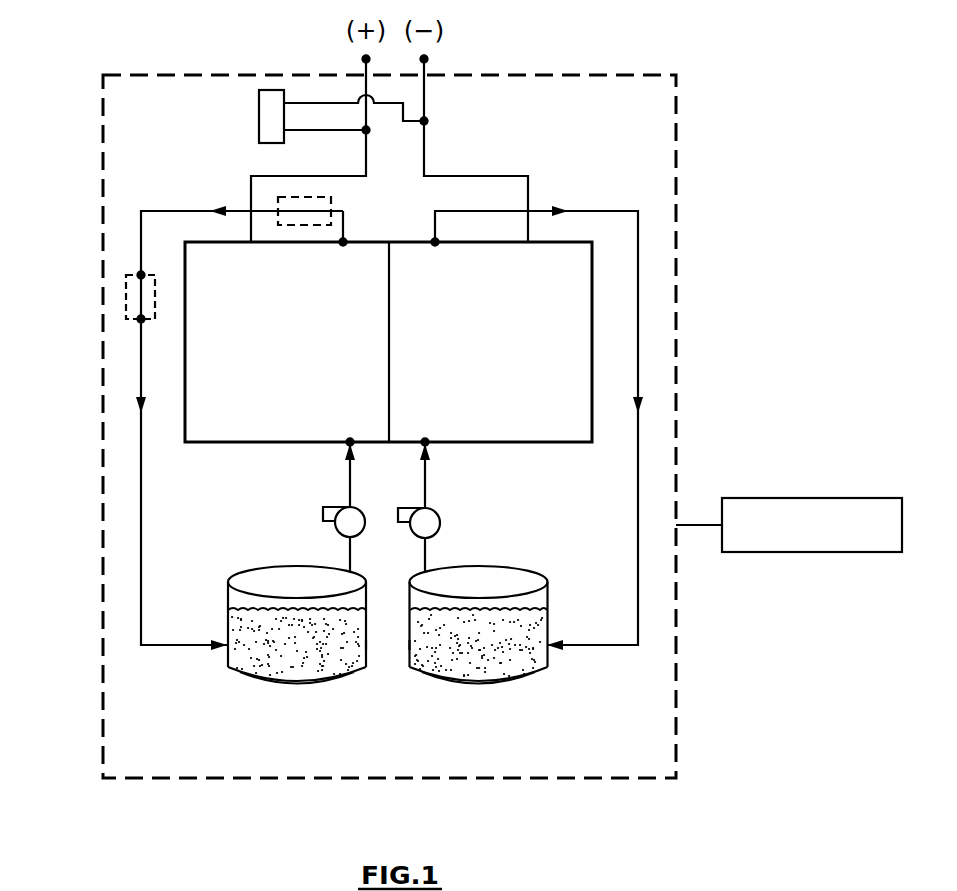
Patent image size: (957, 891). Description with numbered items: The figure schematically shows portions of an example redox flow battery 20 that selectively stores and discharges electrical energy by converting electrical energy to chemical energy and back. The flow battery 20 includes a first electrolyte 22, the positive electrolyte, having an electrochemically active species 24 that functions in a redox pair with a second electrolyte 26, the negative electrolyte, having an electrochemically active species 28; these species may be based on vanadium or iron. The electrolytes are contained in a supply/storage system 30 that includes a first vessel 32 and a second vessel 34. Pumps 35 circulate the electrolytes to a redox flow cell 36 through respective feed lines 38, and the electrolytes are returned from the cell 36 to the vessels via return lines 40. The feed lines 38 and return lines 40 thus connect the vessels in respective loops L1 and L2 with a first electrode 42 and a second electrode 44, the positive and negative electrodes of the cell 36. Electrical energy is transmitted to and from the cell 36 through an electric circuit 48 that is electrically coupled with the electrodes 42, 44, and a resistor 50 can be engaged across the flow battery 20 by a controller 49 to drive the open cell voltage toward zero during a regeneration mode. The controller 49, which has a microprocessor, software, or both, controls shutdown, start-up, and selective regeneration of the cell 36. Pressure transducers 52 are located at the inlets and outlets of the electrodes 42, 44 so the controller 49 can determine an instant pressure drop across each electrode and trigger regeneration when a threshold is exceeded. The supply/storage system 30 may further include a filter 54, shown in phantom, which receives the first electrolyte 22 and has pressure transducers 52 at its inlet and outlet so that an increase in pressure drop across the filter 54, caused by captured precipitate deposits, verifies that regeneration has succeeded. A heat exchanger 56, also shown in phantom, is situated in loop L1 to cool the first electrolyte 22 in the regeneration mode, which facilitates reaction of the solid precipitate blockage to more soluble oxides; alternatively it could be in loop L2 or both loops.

The redox flow battery 20 is at (100, 470).
The first electrolyte 22 is at (243, 660).
The electrochemically active species 24 is at (270, 670).
The second electrolyte 26 is at (505, 650).
The electrochemically active species 28 is at (518, 667).
The supply/storage system 30 is at (386, 690).
The first vessel 32 is at (227, 592).
The second vessel 34 is at (548, 592).
The pump 35 is at (337, 530).
The redox flow cell 36 is at (505, 448).
The feed line 38 is at (350, 490).
The return line 40 is at (141, 365).
The first electrode 42 is at (228, 444).
The second electrode 44 is at (573, 444).
The electric circuit 48 is at (453, 173).
The controller 49 is at (745, 498).
The resistor 50 is at (259, 123).
The pressure transducer 52 is at (141, 275).
The filter 54 is at (126, 290).
The heat exchanger 56 is at (331, 199).
The loop L1 is at (138, 250).
The loop L2 is at (642, 250).